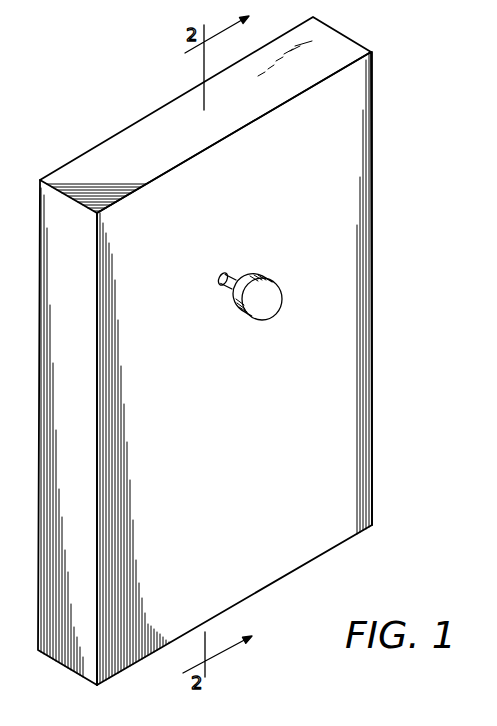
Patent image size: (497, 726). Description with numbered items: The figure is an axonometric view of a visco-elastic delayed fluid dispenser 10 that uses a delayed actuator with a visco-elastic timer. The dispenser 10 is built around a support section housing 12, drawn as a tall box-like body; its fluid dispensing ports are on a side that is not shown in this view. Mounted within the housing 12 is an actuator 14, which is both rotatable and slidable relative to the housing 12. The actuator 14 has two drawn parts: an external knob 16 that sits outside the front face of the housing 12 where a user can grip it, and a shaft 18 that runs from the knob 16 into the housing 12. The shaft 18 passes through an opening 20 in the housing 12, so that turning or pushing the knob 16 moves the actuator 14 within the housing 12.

The visco-elastic delayed fluid dispenser 10 is at (74, 121).
The support section housing 12 is at (374, 291).
The actuator 14 is at (274, 287).
The external knob 16 is at (273, 303).
The shaft 18 is at (227, 293).
The opening 20 is at (219, 277).